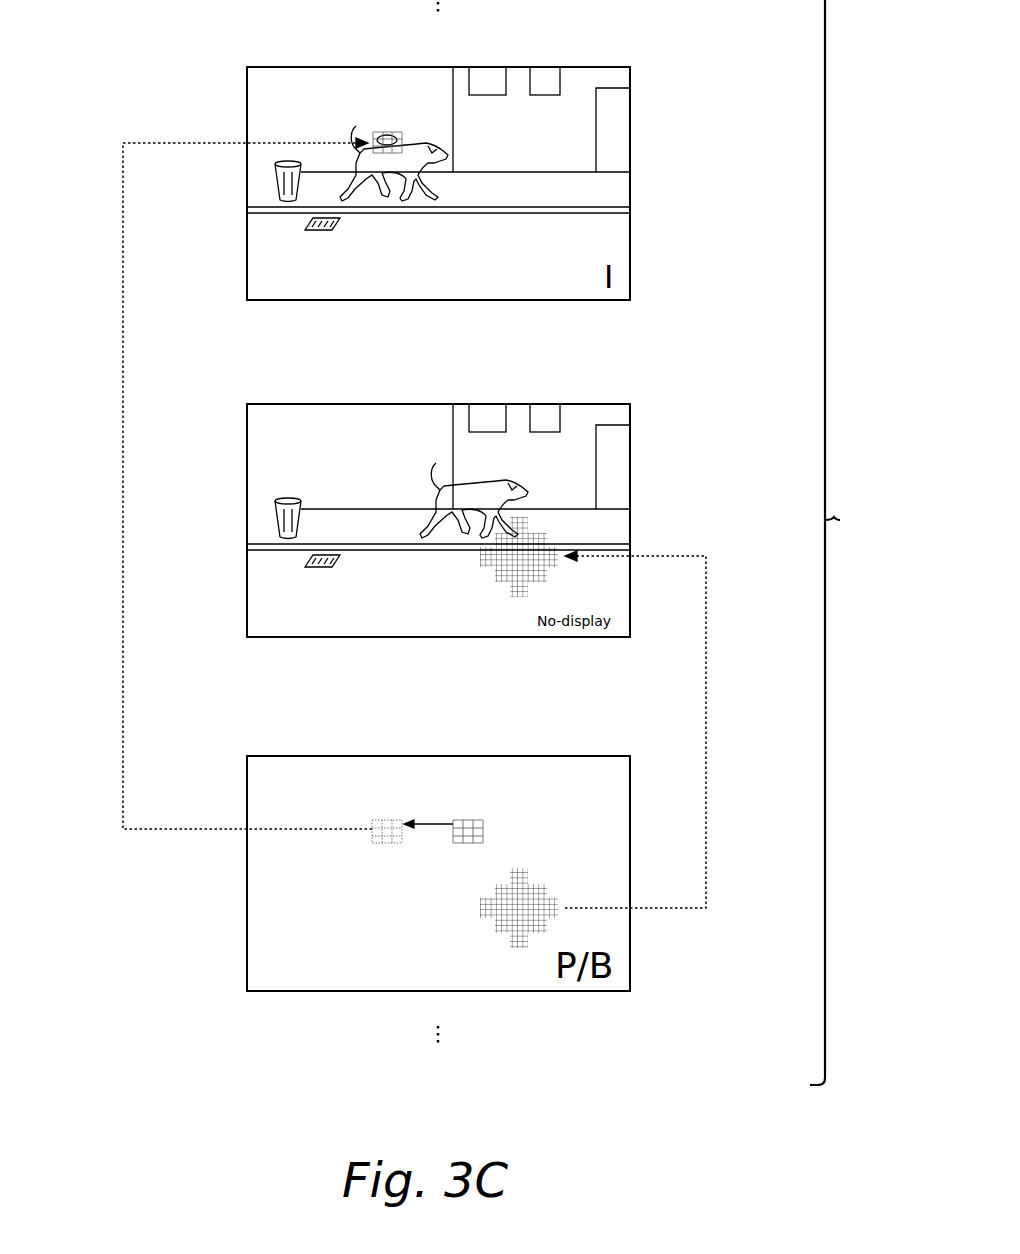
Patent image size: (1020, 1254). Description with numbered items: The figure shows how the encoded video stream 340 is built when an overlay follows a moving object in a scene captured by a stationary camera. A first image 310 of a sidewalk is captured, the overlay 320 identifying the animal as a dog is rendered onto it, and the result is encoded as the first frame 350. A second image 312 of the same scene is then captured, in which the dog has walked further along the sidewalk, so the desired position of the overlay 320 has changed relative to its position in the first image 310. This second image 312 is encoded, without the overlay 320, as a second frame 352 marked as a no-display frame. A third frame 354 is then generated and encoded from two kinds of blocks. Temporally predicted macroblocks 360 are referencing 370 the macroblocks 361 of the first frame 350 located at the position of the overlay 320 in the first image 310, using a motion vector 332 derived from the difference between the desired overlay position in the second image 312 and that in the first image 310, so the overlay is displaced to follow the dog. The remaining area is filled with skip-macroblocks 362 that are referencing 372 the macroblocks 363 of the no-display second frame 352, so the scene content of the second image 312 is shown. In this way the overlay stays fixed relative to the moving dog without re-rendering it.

The first frame 350 is at (282, 67).
The first image 310 is at (260, 117).
The overlay 320 is at (390, 130).
The macroblocks of the first frame 361 is at (372, 130).
The temporally predicted macroblocks 360 is at (485, 826).
The motion vector 332 is at (428, 828).
The second frame 352 is at (283, 404).
The second image 312 is at (260, 468).
The macroblocks of the second frame 363 is at (490, 566).
The third frame 354 is at (277, 756).
The skip-macroblocks 362 is at (490, 915).
The referencing 370 is at (123, 785).
The referencing 372 is at (706, 790).
The encoded video stream 340 is at (851, 542).